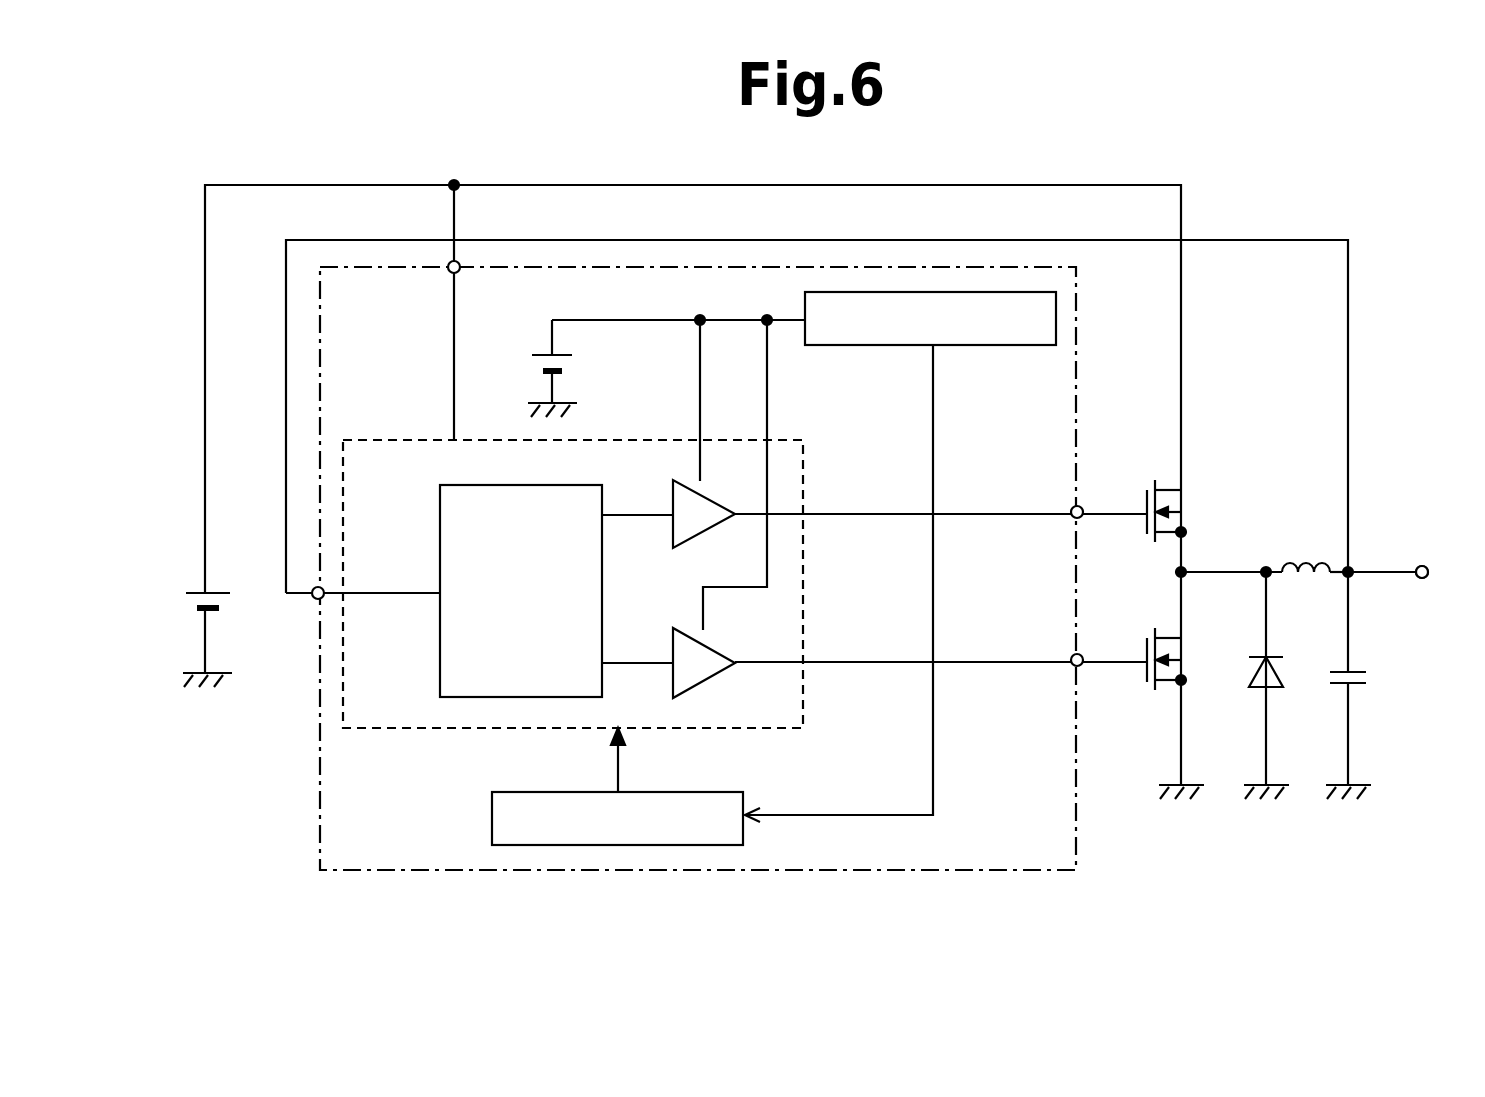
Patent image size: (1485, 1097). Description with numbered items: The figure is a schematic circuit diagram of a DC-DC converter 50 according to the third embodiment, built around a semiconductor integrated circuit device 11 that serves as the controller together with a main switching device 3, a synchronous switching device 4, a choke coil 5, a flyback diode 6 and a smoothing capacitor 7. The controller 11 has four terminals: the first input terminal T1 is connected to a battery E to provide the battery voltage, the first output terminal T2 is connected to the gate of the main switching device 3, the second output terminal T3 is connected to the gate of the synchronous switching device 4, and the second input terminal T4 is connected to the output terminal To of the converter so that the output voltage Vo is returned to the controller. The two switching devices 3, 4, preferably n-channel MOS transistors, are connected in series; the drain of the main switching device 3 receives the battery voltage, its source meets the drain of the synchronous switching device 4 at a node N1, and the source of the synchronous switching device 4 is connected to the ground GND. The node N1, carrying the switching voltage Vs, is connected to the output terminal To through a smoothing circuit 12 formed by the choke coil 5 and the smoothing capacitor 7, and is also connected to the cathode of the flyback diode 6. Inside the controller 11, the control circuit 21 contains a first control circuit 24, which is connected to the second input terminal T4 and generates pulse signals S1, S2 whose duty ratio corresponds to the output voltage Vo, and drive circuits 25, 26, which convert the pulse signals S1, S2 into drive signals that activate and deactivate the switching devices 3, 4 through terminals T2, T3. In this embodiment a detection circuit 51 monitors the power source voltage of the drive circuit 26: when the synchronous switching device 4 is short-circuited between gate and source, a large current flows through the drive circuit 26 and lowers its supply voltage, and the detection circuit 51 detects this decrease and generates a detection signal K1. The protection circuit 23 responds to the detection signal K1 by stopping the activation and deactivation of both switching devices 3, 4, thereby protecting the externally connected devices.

The DC-DC converter 50 is at (1392, 248).
The semiconductor integrated circuit device 11 is at (1076, 294).
The control circuit 21 is at (642, 438).
The first control circuit 24 is at (570, 485).
The drive circuit 25 is at (734, 483).
The drive circuit 26 is at (708, 646).
The protection circuit 23 is at (705, 792).
The detection circuit 51 is at (958, 345).
The main switching device 3 is at (1143, 501).
The synchronous switching device 4 is at (1144, 649).
The choke coil 5 is at (1293, 558).
The flyback diode 6 is at (1259, 690).
The smoothing capacitor 7 is at (1360, 688).
The smoothing circuit 12 is at (1387, 643).
The first input terminal T1 is at (459, 273).
The first output terminal T2 is at (1082, 519).
The second output terminal T3 is at (1082, 667).
The second input terminal T4 is at (312, 599).
The battery E is at (194, 593).
The node N1 is at (1186, 578).
The switching voltage Vs is at (1225, 554).
The output voltage Vo is at (1406, 574).
The output terminal To is at (1421, 566).
The pulse signal S1 is at (637, 495).
The pulse signal S2 is at (637, 645).
The detection signal K1 is at (839, 583).
The ground GND is at (1265, 811).